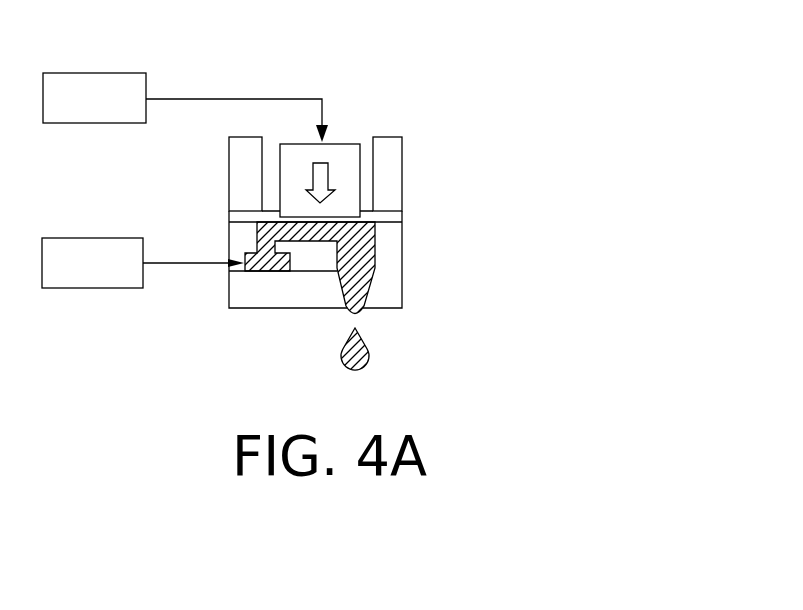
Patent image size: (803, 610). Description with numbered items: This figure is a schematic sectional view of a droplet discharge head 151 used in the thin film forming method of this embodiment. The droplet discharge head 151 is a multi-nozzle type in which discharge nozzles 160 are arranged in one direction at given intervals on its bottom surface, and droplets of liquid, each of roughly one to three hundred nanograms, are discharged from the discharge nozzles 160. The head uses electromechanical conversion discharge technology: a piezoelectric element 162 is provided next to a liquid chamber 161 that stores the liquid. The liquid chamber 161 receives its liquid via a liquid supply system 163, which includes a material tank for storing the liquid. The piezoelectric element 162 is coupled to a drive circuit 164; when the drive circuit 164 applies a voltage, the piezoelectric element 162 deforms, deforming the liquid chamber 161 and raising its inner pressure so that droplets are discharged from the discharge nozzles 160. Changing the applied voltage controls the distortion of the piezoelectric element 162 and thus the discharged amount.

The droplet discharge head 151 is at (428, 92).
The discharge nozzle 160 is at (360, 315).
The liquid chamber 161 is at (350, 230).
The piezoelectric element 162 is at (345, 144).
The liquid supply system 163 is at (90, 238).
The drive circuit 164 is at (92, 73).